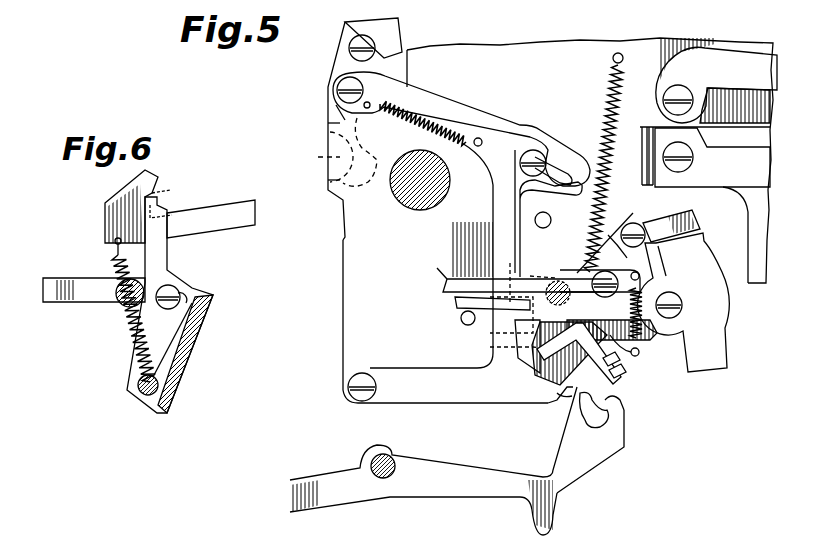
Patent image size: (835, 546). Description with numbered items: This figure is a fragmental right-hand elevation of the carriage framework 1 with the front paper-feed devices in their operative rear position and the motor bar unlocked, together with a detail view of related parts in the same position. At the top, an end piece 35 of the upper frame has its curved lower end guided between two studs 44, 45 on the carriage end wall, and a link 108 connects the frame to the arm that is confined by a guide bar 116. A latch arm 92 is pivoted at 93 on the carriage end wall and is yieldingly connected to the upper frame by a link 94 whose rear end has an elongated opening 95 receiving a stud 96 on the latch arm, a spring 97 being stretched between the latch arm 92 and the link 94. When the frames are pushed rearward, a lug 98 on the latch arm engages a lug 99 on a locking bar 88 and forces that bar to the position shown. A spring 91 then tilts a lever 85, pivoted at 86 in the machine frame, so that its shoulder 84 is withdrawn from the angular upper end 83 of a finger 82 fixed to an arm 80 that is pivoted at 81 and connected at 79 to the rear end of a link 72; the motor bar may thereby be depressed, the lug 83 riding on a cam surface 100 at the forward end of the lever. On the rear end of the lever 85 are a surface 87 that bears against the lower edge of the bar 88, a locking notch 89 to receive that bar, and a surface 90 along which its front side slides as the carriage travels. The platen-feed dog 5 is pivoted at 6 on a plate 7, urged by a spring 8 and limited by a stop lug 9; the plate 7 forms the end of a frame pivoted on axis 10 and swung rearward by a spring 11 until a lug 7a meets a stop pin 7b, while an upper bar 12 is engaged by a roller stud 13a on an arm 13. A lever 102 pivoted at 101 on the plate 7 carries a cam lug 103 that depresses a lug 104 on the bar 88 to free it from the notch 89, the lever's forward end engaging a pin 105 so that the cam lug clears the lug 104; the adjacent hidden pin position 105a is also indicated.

In FIG. 5, the carriage framework 1 is at (553, 46).
In FIG. 5, the link 108 is at (400, 38).
In FIG. 5, the end piece 35 is at (338, 68).
In FIG. 5, the link 94 is at (455, 112).
In FIG. 5, the spring 97 is at (440, 133).
In FIG. 5, the stud 96 is at (548, 157).
In FIG. 5, the elongated opening 95 is at (577, 160).
In FIG. 5, the stud 44 is at (330, 155).
In FIG. 5, the stud 45 is at (361, 152).
In FIG. 5, the latch arm 92 is at (420, 375).
In FIG. 5, the pivot 93 is at (373, 380).
In FIG. 5, the guide bar 116 is at (670, 78).
In FIG. 5, the roller stud 13a is at (700, 222).
In FIG. 5, the spring 11 is at (606, 92).
In FIG. 5, the stop pin 7b is at (546, 229).
In FIG. 5, the upper bar 12 is at (632, 225).
In FIG. 5, the plate 7 is at (592, 244).
In FIG. 5, the dog 5 is at (447, 283).
In FIG. 5, the lug 7a is at (512, 276).
In FIG. 5, the pivot 6 is at (598, 284).
In FIG. 5, the stop lug 9 is at (588, 273).
In FIG. 5, the lever 102 is at (631, 307).
In FIG. 5, the arm 13 is at (730, 340).
In FIG. 5, the axis 10 is at (683, 303).
In FIG. 5, the spring 8 is at (640, 352).
In FIG. 5, the pin 105 is at (461, 318).
In FIG. 5, the pin 105a is at (495, 348).
In FIG. 5, the pivot 101 is at (554, 300).
In FIG. 5, the cam lug 103 is at (520, 365).
In FIG. 5, the lug 104 is at (533, 390).
In FIG. 5, the lug 98 is at (553, 401).
In FIG. 5, the lug 99 is at (567, 396).
In FIG. 5, the locking bar 88 is at (620, 392).
In FIG. 5, the surface 90 is at (623, 406).
In FIG. 5, the locking notch 89 is at (625, 416).
In FIG. 5, the surface 87 is at (583, 420).
In FIG. 5, the lever 85 is at (317, 478).
In FIG. 6, the lever 85 is at (228, 213).
In FIG. 5, the pivot 86 is at (390, 458).
In FIG. 6, the finger 82 is at (165, 259).
In FIG. 6, the cam surface 100 is at (160, 183).
In FIG. 6, the angular upper end 83 is at (170, 190).
In FIG. 6, the shoulder 84 is at (172, 206).
In FIG. 6, the link 72 is at (60, 283).
In FIG. 6, the pivot 79 is at (122, 302).
In FIG. 6, the spring 91 is at (128, 325).
In FIG. 6, the arm 80 is at (200, 360).
In FIG. 6, the pivot 81 is at (136, 400).